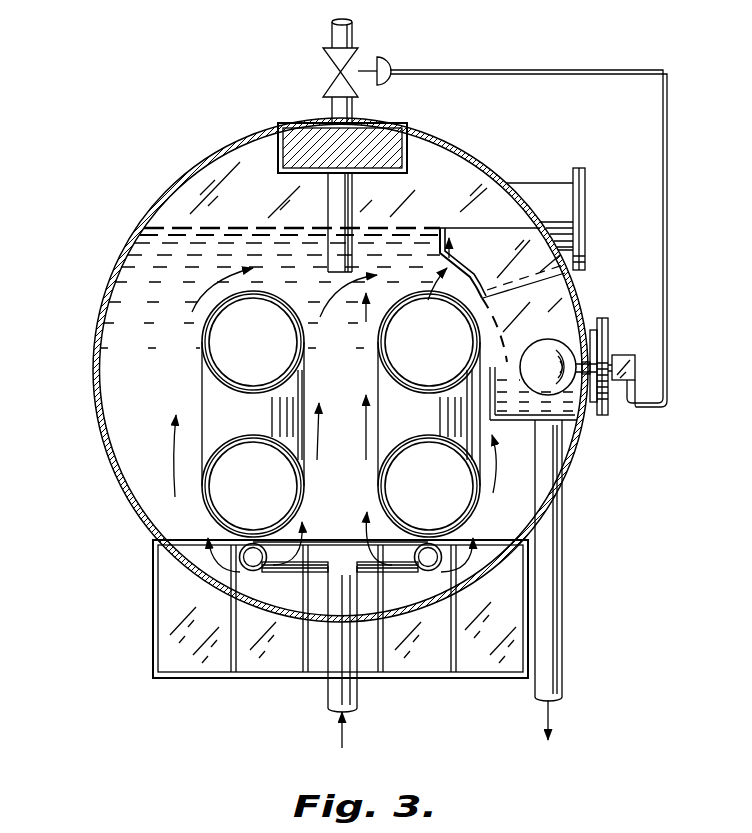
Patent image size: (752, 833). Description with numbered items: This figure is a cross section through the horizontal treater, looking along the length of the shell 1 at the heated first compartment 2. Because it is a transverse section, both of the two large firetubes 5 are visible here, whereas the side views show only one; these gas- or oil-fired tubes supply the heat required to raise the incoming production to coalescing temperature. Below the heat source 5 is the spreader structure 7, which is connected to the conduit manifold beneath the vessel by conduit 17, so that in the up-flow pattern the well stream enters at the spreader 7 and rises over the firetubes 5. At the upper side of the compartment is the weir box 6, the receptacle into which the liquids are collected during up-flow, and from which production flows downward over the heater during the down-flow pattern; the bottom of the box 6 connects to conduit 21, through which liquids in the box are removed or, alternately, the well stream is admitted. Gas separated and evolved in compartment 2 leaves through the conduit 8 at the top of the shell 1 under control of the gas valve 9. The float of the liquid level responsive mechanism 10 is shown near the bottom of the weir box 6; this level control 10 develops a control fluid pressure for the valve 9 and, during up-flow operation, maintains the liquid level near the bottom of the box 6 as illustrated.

The shell 1 is at (163, 194).
The first compartment 2 is at (127, 312).
The firetubes 5 is at (390, 480).
The weir box 6 is at (462, 278).
The spreader structure 7 is at (318, 572).
The conduit 8 is at (352, 108).
The gas valve 9 is at (336, 78).
The liquid level responsive mechanism 10 is at (612, 333).
The conduit 17 is at (328, 690).
The conduit 21 is at (565, 568).